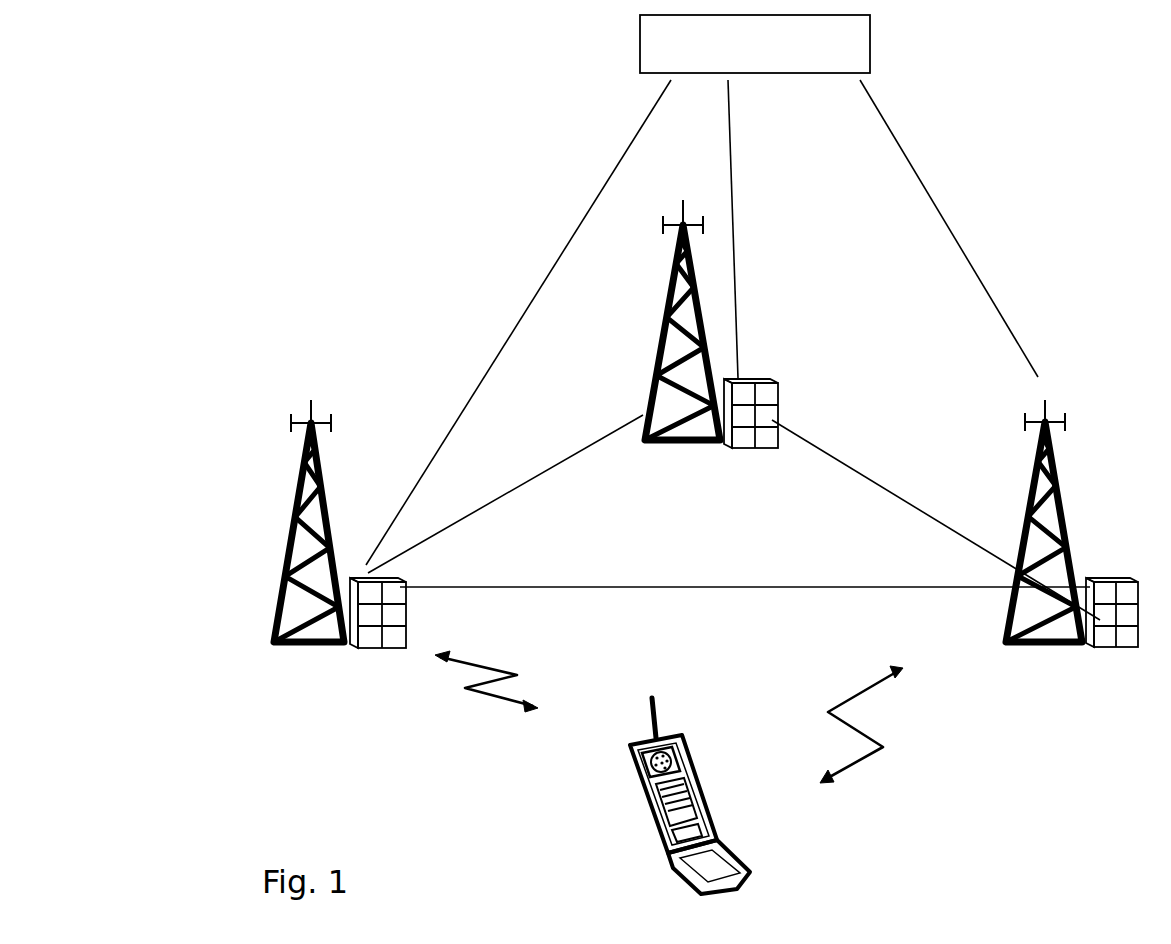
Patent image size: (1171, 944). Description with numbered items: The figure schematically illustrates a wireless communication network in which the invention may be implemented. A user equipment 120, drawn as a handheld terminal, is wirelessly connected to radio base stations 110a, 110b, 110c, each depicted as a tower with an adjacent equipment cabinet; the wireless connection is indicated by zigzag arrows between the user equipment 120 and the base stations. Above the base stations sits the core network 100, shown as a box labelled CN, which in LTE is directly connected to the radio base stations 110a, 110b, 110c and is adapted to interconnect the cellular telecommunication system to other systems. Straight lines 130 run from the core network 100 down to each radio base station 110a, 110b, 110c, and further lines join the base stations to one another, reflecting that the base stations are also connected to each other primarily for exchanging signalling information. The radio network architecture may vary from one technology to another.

The core network 100 is at (912, 6).
The radio base station 110a is at (372, 545).
The radio base station 110b is at (1112, 566).
The radio base station 110c is at (782, 398).
The user equipment 120 is at (716, 815).
The network links 130 is at (733, 350).